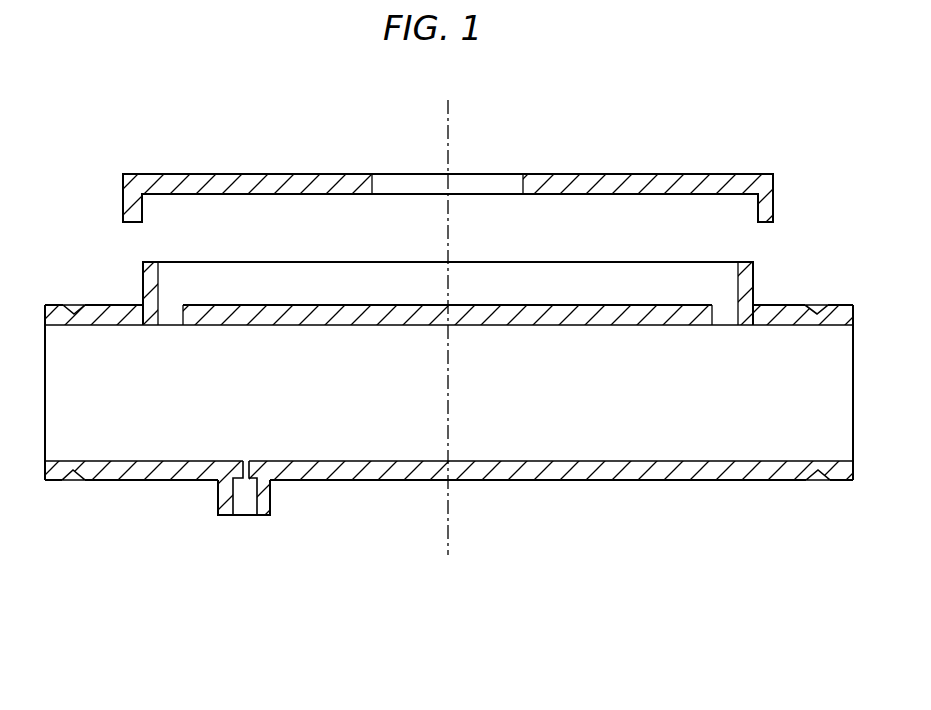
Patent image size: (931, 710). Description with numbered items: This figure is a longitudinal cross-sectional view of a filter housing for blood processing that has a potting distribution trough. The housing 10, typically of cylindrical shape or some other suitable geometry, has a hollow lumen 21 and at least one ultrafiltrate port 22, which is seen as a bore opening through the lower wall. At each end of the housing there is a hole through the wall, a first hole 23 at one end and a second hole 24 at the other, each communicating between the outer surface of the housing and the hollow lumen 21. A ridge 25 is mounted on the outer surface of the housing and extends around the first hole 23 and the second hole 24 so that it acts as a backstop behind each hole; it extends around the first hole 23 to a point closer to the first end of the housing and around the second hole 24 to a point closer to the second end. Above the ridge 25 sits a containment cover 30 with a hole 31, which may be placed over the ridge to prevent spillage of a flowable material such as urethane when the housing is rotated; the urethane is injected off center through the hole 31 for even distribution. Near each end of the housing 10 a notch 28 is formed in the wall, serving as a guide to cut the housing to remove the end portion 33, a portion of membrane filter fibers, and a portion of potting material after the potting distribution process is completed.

The housing 10 is at (591, 504).
The hollow lumen 21 is at (163, 449).
The ultrafiltrate port 22 is at (260, 494).
The first hole 23 is at (722, 318).
The second hole 24 is at (171, 318).
The ridge 25 is at (388, 262).
The notch 28 is at (76, 474).
The containment cover 30 is at (227, 174).
The hole 31 is at (485, 174).
The end portion 33 is at (52, 305).